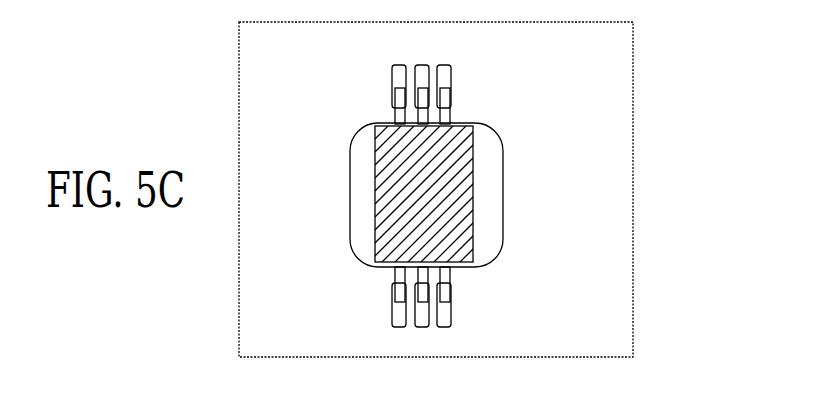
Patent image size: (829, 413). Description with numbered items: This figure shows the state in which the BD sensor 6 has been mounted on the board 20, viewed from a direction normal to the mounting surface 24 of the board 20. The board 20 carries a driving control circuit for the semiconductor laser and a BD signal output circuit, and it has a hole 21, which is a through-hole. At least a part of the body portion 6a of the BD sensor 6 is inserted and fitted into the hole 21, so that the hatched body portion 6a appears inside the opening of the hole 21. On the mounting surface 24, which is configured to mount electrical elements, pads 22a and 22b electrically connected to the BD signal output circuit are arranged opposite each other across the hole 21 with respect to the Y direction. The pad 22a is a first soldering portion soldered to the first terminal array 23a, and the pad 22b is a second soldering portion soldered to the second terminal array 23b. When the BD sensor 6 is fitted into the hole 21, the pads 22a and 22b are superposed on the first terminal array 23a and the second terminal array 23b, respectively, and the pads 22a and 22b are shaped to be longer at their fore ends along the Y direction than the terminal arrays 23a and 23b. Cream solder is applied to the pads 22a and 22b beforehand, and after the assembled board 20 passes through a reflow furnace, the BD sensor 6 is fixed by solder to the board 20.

The board 20 is at (670, 125).
The hole 21 is at (490, 187).
The pad 22a is at (452, 76).
The pad 22b is at (445, 314).
The first terminal array 23a is at (451, 113).
The second terminal array 23b is at (447, 286).
The mounting surface 24 is at (620, 226).
The BD sensor 6 is at (344, 185).
The body portion 6a is at (377, 222).